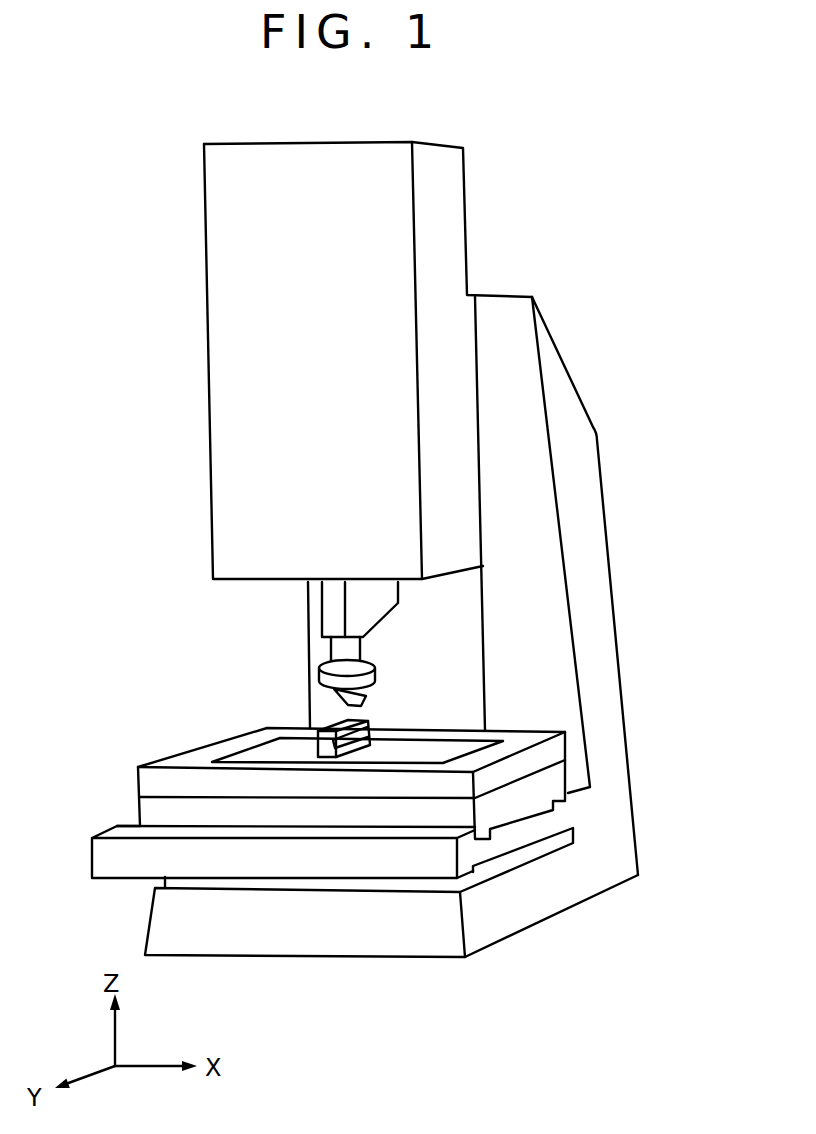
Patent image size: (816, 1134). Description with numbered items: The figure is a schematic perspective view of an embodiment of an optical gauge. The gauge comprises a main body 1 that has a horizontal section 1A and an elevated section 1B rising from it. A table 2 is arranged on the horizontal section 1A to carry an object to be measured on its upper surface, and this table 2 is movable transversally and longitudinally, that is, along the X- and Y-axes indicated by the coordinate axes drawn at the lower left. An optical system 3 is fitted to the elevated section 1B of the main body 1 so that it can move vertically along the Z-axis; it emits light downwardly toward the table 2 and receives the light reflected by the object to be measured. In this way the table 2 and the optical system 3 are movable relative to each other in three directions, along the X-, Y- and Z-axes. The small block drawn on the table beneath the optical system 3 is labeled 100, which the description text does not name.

The main body 1 is at (422, 646).
The horizontal section 1A is at (513, 842).
The elevated section 1B is at (592, 545).
The table 2 is at (193, 755).
The optical system 3 is at (328, 603).
The workpiece 100 is at (363, 720).